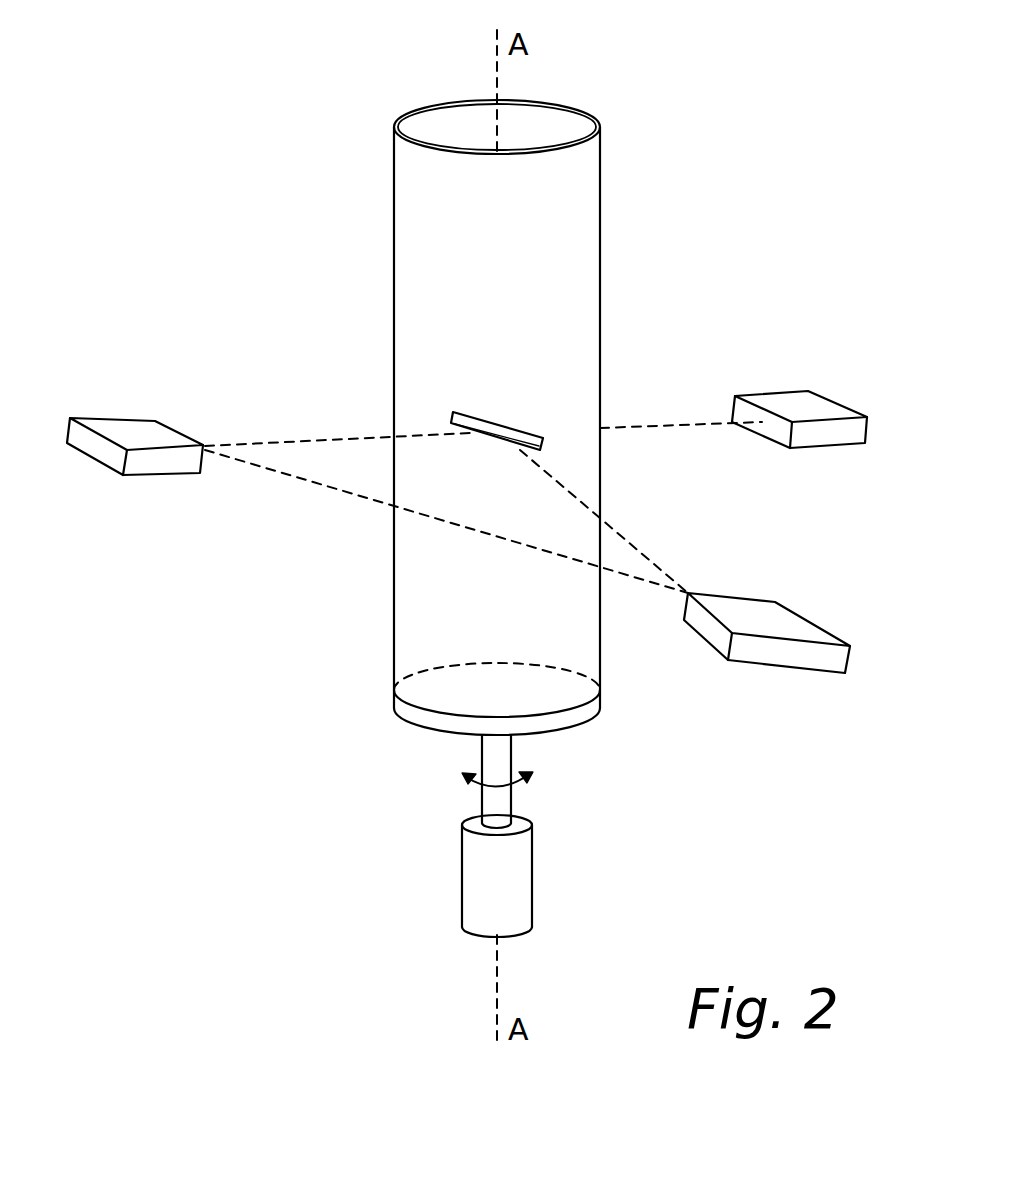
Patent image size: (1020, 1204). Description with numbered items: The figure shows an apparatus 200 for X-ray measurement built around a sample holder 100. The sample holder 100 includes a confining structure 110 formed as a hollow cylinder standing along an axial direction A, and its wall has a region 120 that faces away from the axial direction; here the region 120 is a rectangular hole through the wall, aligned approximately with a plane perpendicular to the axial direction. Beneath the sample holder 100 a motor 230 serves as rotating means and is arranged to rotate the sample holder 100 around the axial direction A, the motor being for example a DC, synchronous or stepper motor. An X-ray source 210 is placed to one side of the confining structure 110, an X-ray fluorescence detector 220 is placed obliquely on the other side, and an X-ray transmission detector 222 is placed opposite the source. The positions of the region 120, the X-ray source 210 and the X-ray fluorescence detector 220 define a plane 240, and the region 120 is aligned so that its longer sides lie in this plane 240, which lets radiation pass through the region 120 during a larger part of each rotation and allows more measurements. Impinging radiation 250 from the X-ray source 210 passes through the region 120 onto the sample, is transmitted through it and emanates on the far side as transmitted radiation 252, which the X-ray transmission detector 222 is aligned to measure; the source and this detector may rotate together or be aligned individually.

The apparatus 200 is at (280, 136).
The confining structure 110 is at (600, 268).
The sample holder 100 is at (394, 655).
The region 120 is at (448, 418).
The X-ray source 210 is at (108, 418).
The X-ray fluorescence detector 220 is at (815, 622).
The X-ray transmission detector 222 is at (840, 400).
The motor 230 is at (533, 872).
The plane 240 is at (320, 497).
The impinging radiation 250 is at (298, 437).
The transmitted radiation 252 is at (698, 420).